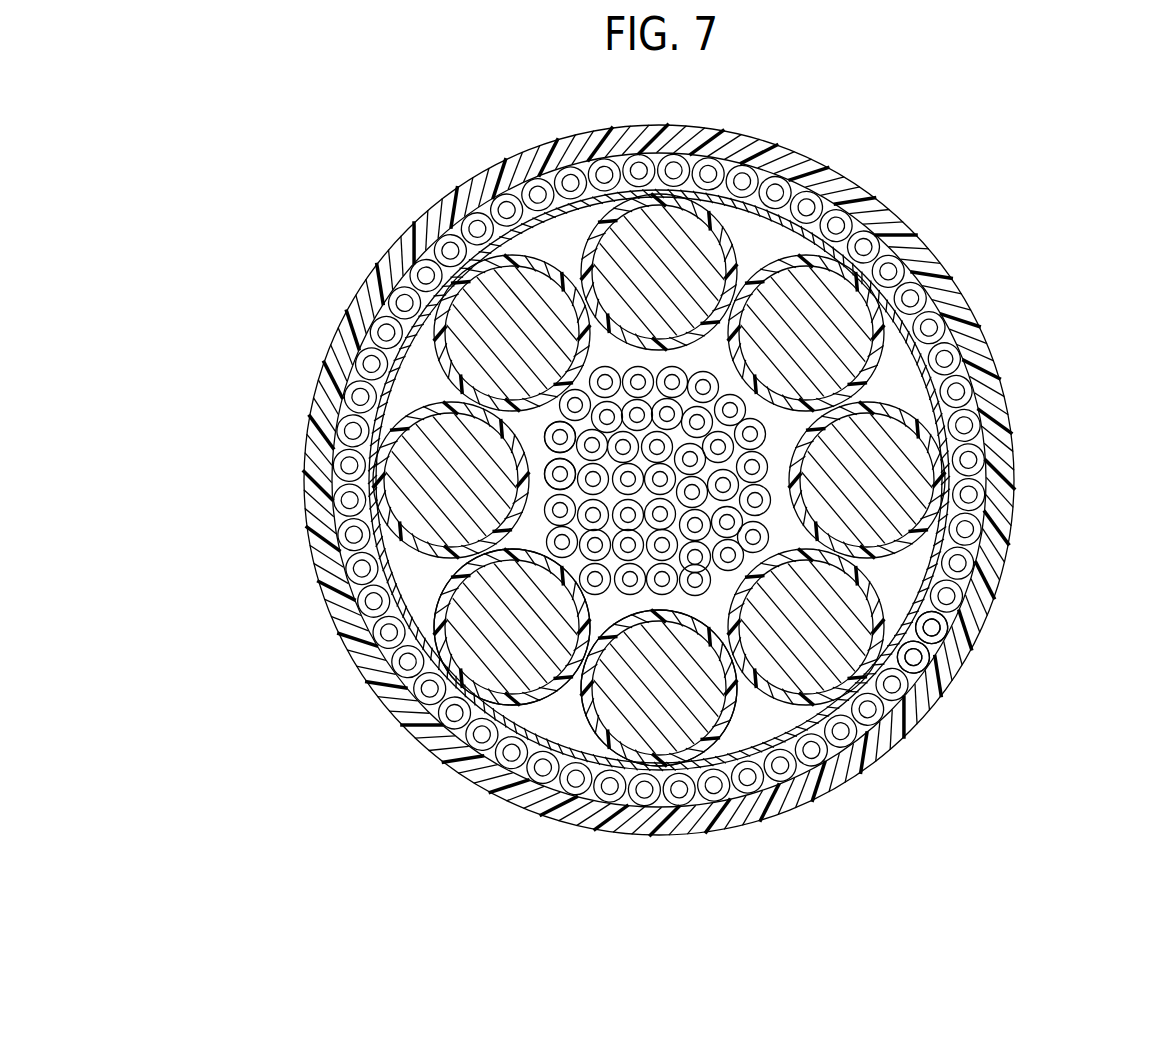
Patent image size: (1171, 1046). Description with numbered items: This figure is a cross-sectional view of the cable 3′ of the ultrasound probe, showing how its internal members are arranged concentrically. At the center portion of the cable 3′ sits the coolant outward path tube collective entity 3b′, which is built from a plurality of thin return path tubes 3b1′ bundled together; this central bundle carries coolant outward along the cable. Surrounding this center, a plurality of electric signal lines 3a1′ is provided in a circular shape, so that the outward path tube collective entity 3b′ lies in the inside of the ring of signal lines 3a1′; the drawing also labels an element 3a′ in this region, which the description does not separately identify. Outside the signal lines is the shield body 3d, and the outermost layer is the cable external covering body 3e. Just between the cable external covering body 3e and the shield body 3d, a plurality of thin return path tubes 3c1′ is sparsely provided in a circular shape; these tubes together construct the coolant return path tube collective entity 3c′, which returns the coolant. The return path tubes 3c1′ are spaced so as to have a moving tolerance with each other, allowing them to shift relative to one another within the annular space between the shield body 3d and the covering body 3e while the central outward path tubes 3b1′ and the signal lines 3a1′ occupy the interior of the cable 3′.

The cable 3′ is at (429, 160).
The cable external covering body 3e is at (748, 148).
The shield body 3d is at (832, 190).
The coolant return path tube collective entity 3c′ is at (984, 480).
The thin return path tube 3c1′ is at (935, 672).
The coolant outward path tube collective entity 3b′ is at (535, 527).
The thin return path tube 3b1′ is at (556, 474).
The insulated conductor 3a′ is at (748, 714).
The electric signal line 3a1′ is at (590, 713).